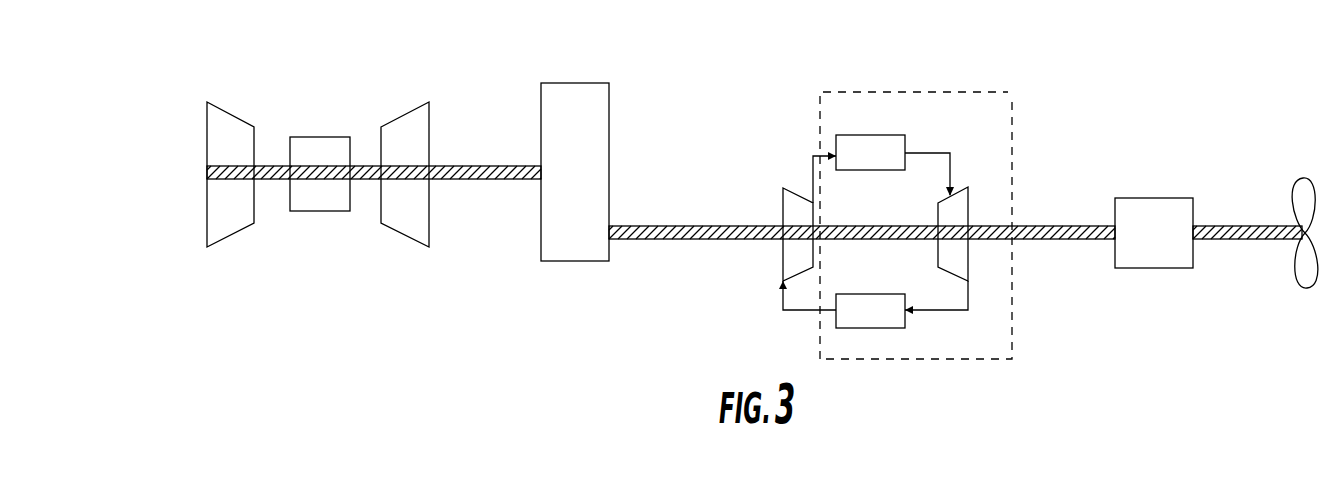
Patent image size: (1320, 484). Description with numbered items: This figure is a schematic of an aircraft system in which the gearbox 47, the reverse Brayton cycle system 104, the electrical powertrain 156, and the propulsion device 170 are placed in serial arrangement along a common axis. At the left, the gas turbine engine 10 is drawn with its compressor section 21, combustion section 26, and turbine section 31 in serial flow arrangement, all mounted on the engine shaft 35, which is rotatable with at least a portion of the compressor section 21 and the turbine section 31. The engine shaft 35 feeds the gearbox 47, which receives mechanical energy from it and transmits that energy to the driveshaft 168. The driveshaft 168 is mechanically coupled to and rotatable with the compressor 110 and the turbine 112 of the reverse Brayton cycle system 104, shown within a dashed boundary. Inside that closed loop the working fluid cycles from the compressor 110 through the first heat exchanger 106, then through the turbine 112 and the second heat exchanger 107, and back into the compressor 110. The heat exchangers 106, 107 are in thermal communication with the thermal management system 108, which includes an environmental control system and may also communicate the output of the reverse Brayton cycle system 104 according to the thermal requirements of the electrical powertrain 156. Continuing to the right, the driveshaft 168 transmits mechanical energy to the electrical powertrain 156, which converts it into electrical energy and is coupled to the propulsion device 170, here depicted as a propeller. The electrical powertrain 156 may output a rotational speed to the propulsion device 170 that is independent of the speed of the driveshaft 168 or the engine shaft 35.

The gas turbine engine 10 is at (284, 60).
The compressor section 21 is at (222, 132).
The combustion section 26 is at (318, 145).
The turbine section 31 is at (407, 122).
The engine shaft 35 is at (207, 172).
The gearbox 47 is at (586, 180).
The reverse Brayton cycle system 104 is at (932, 187).
The first heat exchanger 106 is at (887, 166).
The second heat exchanger 107 is at (887, 325).
The thermal management system 108 is at (1012, 102).
The compressor 110 is at (792, 190).
The turbine 112 is at (957, 212).
The electrical powertrain 156 is at (1172, 248).
The driveshaft 168 is at (733, 238).
The propulsion device 170 is at (1305, 178).